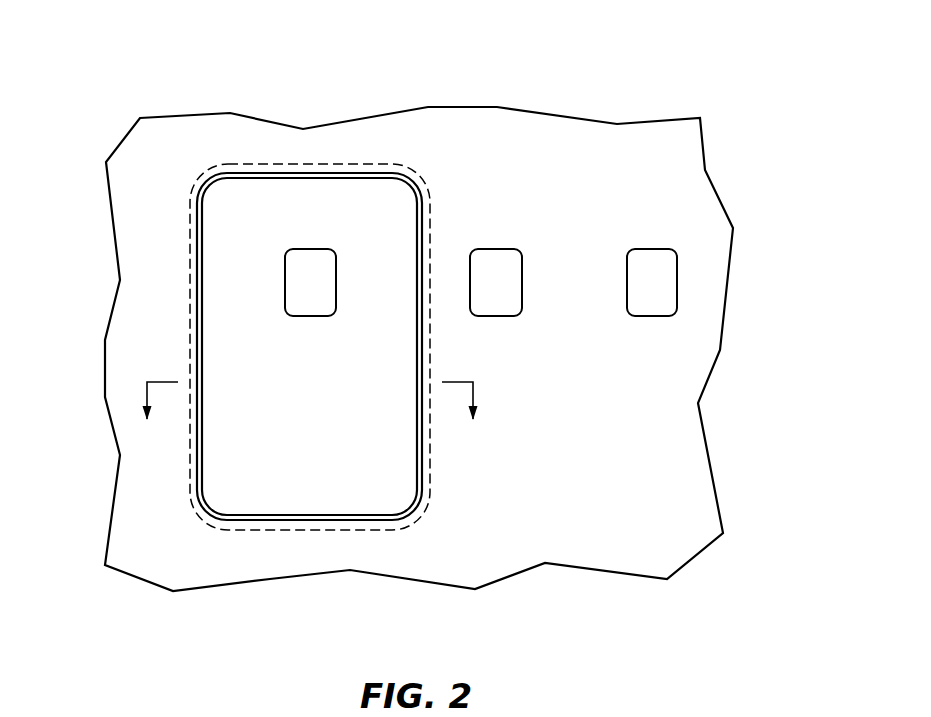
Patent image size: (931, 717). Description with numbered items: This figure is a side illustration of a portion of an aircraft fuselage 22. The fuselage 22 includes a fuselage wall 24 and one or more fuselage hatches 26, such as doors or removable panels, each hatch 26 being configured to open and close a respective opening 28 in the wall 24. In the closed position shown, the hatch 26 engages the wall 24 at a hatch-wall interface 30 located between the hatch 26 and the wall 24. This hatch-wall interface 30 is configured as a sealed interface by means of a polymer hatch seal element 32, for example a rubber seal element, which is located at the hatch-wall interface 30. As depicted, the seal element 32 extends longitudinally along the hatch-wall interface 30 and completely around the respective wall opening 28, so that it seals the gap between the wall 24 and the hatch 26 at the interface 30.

The aircraft fuselage 22 is at (731, 80).
The fuselage wall 24 is at (110, 505).
The fuselage hatch 26 is at (277, 520).
The opening 28 is at (424, 186).
The hatch-wall interface 30 is at (275, 172).
The hatch seal element 32 is at (430, 470).